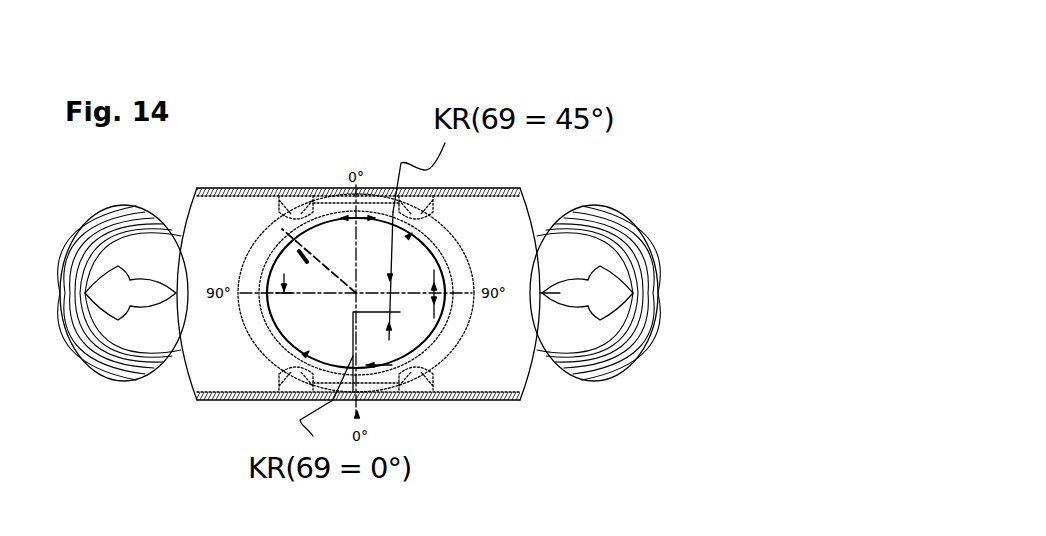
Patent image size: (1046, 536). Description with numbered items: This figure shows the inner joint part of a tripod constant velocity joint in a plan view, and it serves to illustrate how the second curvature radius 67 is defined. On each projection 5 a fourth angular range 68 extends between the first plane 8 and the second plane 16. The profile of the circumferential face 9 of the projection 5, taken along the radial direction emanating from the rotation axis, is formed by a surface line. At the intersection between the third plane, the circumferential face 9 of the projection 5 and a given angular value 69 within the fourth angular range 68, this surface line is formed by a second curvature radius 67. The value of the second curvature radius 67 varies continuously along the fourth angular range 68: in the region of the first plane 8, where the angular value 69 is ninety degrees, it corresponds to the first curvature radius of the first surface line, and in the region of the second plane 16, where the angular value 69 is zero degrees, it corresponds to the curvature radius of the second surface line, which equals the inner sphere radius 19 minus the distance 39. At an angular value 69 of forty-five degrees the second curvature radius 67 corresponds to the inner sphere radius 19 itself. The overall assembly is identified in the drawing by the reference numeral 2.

The device 2 is at (610, 80).
The projection 5 is at (628, 300).
The first plane 8 is at (233, 296).
The circumferential face 9 is at (593, 207).
The second plane 16 is at (363, 418).
The inner sphere radius 19 is at (420, 234).
The distance 39 is at (393, 318).
The second curvature radius 67 is at (374, 276).
The fourth angular range 68 is at (322, 226).
The angular value 69 is at (291, 276).